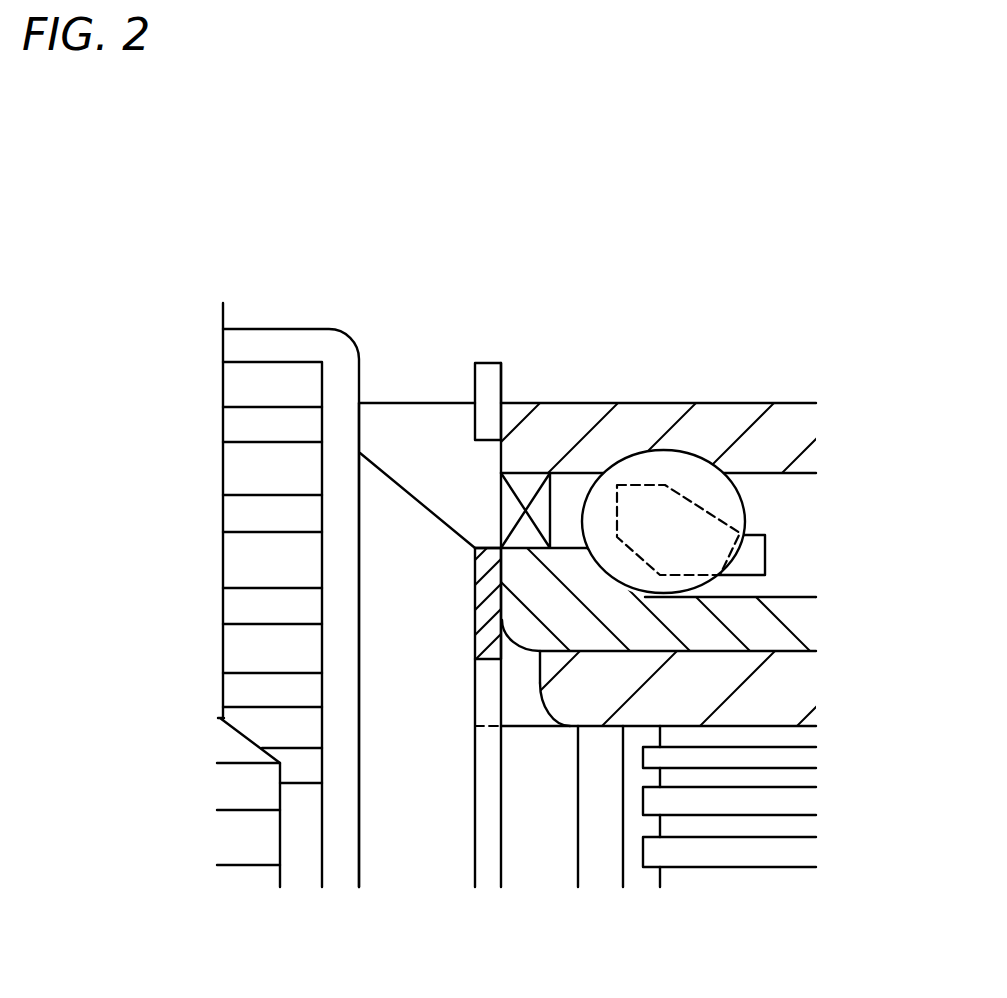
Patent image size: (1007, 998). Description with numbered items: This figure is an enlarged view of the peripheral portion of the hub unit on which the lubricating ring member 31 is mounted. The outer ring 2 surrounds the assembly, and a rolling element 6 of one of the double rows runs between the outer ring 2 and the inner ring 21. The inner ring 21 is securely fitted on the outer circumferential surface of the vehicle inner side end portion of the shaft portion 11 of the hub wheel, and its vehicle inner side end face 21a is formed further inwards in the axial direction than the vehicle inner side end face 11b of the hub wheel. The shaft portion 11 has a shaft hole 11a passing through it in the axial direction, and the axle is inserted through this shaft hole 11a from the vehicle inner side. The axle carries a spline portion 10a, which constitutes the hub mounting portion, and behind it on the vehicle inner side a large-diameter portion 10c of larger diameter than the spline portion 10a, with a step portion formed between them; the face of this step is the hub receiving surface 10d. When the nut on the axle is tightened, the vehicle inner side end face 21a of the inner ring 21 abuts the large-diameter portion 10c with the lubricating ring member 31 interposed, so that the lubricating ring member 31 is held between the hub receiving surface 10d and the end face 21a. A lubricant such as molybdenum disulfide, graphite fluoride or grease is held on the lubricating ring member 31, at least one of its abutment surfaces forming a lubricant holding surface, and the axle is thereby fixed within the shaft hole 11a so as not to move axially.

The outer ring 2 is at (770, 432).
The rolling element 6 is at (665, 512).
The inner ring 21 is at (768, 625).
The vehicle inner side end face 21a is at (501, 547).
The lubricating ring member 31 is at (473, 602).
The shaft portion 11 is at (793, 683).
The shaft hole 11a is at (763, 723).
The vehicle inner side end face 11b is at (540, 683).
The spline portion 10a is at (780, 804).
The large-diameter portion 10c is at (407, 820).
The hub receiving surface 10d is at (475, 803).